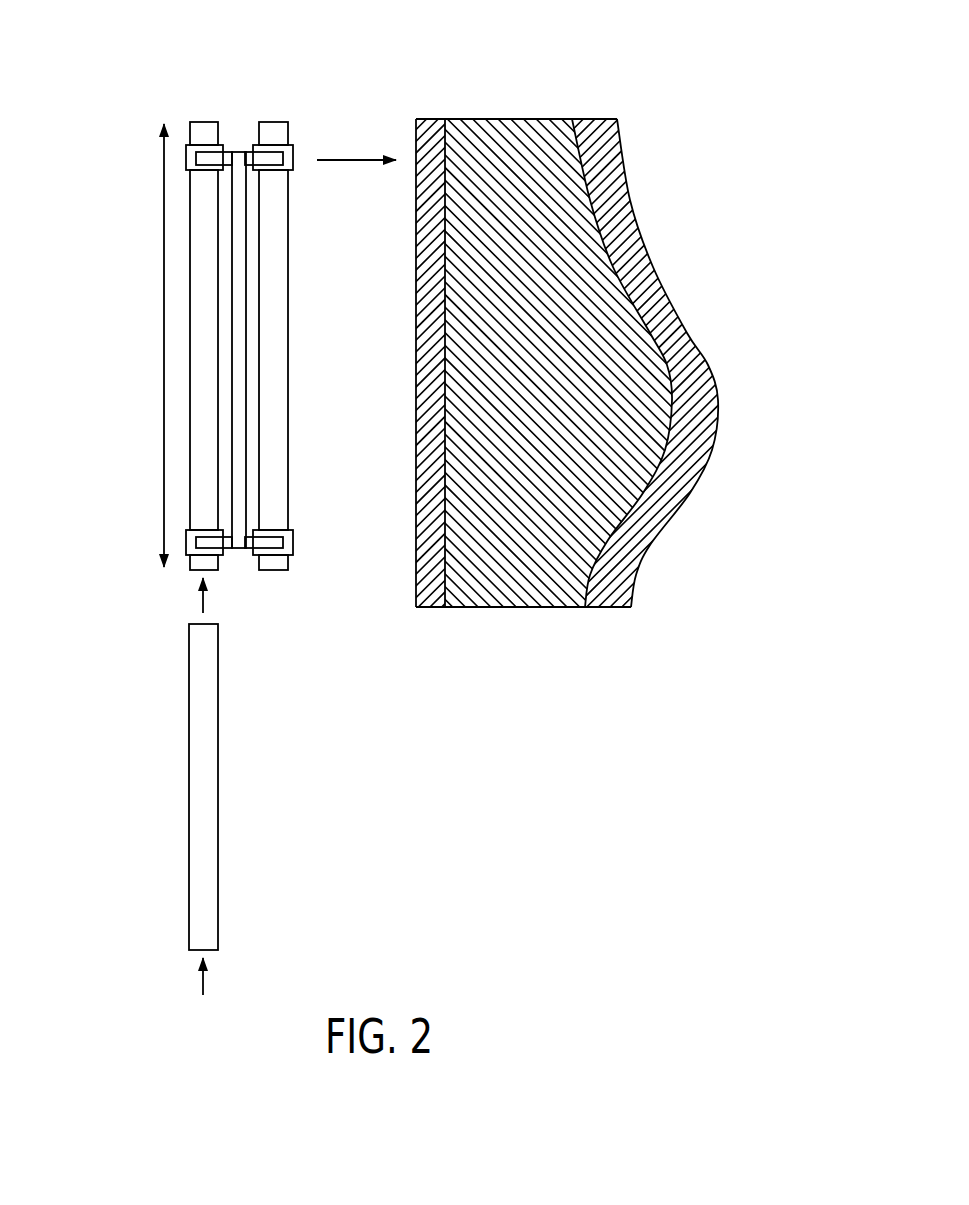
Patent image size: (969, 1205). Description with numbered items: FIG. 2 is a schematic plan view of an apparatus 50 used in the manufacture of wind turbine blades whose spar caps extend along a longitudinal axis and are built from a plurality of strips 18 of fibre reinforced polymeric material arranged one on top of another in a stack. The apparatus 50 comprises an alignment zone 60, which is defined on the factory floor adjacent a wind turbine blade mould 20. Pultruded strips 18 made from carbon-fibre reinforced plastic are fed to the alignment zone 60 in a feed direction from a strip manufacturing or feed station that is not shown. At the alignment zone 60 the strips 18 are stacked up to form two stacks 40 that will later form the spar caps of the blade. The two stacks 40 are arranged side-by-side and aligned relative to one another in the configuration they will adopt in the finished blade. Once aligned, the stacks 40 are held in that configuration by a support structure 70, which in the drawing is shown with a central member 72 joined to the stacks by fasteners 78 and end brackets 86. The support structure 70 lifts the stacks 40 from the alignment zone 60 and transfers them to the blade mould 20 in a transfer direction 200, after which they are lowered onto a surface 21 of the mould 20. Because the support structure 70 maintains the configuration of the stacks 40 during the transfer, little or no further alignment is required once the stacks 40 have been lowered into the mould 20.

The apparatus 50 is at (77, 80).
The alignment zone 60 is at (148, 372).
The support structure 70 is at (311, 138).
The stacks 40 is at (205, 345).
The connecting bar 72 is at (237, 448).
The fastener 78 is at (225, 156).
The bracket 86 is at (187, 168).
The strips 18 is at (208, 843).
The transfer direction 200 is at (356, 145).
The wind turbine blade mould 20 is at (658, 302).
The surface of the mould 21 is at (525, 593).